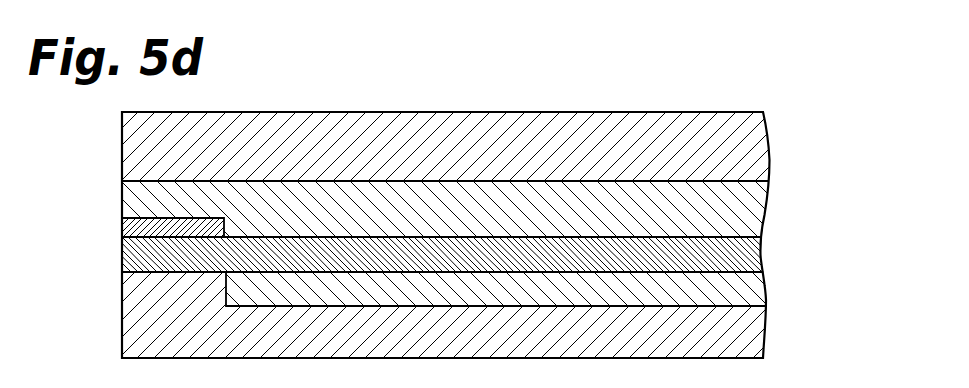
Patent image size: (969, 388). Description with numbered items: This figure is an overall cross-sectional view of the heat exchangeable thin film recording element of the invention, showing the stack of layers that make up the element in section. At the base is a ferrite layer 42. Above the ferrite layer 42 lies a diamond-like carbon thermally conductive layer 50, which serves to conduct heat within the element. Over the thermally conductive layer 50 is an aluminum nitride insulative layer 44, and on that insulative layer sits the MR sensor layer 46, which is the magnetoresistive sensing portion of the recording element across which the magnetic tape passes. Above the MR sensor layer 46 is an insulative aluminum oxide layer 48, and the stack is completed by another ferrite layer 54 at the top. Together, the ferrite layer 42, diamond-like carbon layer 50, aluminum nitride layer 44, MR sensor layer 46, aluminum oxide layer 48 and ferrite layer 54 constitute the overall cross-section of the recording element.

The ferrite layer 42 is at (752, 337).
The insulative aluminum nitride layer 44 is at (750, 245).
The MR sensor layer 46 is at (152, 225).
The insulative aluminum oxide layer 48 is at (750, 193).
The diamond-like carbon thermally conductive layer 50 is at (750, 290).
The another ferrite layer 54 is at (750, 140).